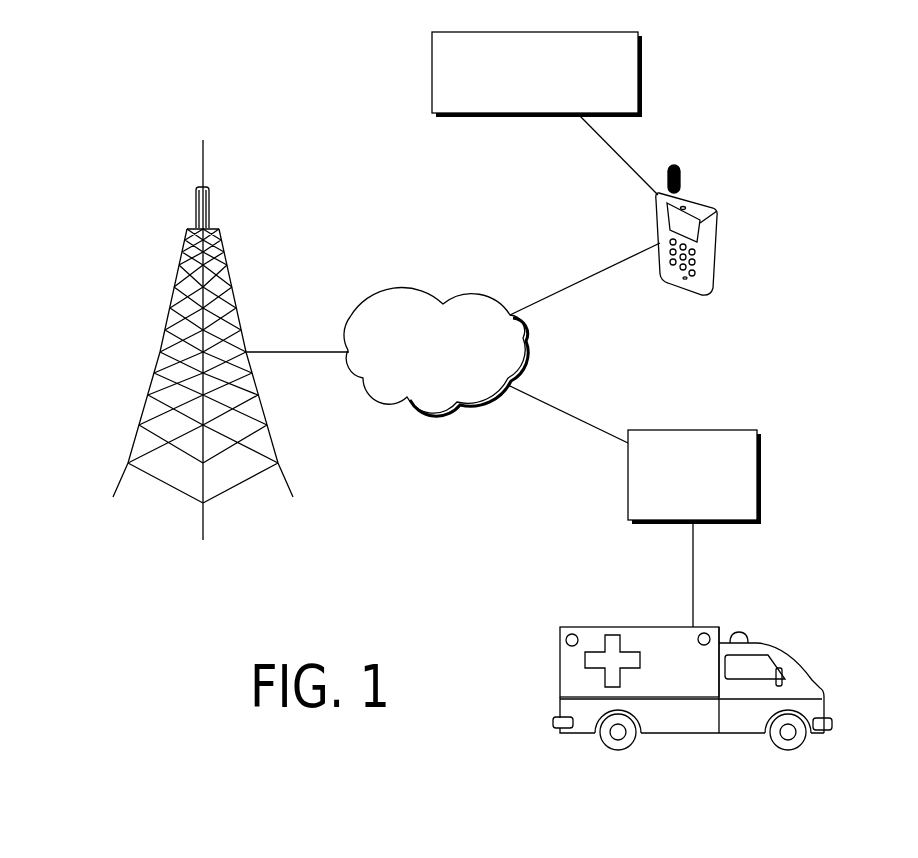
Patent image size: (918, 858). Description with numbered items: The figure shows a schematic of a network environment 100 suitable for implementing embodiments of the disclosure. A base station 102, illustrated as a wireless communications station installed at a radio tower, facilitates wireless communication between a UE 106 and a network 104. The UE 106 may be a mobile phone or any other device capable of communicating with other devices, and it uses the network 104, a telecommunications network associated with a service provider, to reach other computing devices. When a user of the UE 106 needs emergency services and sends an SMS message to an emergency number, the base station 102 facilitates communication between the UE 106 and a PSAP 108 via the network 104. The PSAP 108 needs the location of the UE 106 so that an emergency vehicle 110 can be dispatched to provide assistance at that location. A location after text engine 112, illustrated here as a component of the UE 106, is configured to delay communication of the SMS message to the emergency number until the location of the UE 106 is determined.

The network environment 100 is at (86, 118).
The base station 102 is at (160, 352).
The network 104 is at (412, 292).
The UE 106 is at (718, 233).
The PSAP 108 is at (760, 477).
The emergency vehicle 110 is at (595, 627).
The location after text engine 112 is at (432, 73).